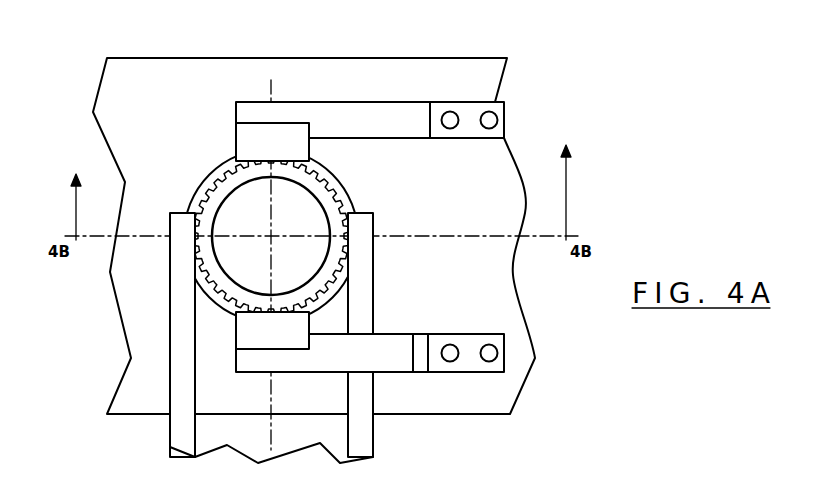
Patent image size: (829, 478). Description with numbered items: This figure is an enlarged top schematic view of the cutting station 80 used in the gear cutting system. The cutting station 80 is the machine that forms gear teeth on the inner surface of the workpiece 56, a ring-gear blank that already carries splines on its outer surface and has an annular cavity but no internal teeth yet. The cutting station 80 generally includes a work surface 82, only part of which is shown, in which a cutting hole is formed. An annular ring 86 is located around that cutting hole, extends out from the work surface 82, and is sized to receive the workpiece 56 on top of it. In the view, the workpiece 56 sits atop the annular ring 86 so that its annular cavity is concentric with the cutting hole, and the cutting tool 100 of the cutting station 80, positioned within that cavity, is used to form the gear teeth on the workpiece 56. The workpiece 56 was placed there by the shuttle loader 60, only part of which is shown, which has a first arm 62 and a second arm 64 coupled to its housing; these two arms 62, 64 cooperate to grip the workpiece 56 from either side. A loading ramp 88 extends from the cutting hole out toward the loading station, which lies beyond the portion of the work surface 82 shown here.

The workpiece 56 is at (210, 285).
The shuttle loader 60 is at (468, 118).
The first arm 62 is at (395, 353).
The second arm 64 is at (320, 122).
The cutting station 80 is at (316, 235).
The work surface 82 is at (150, 100).
The annular ring 86 is at (228, 157).
The loading ramp 88 is at (297, 407).
The cutting tool 100 is at (310, 262).